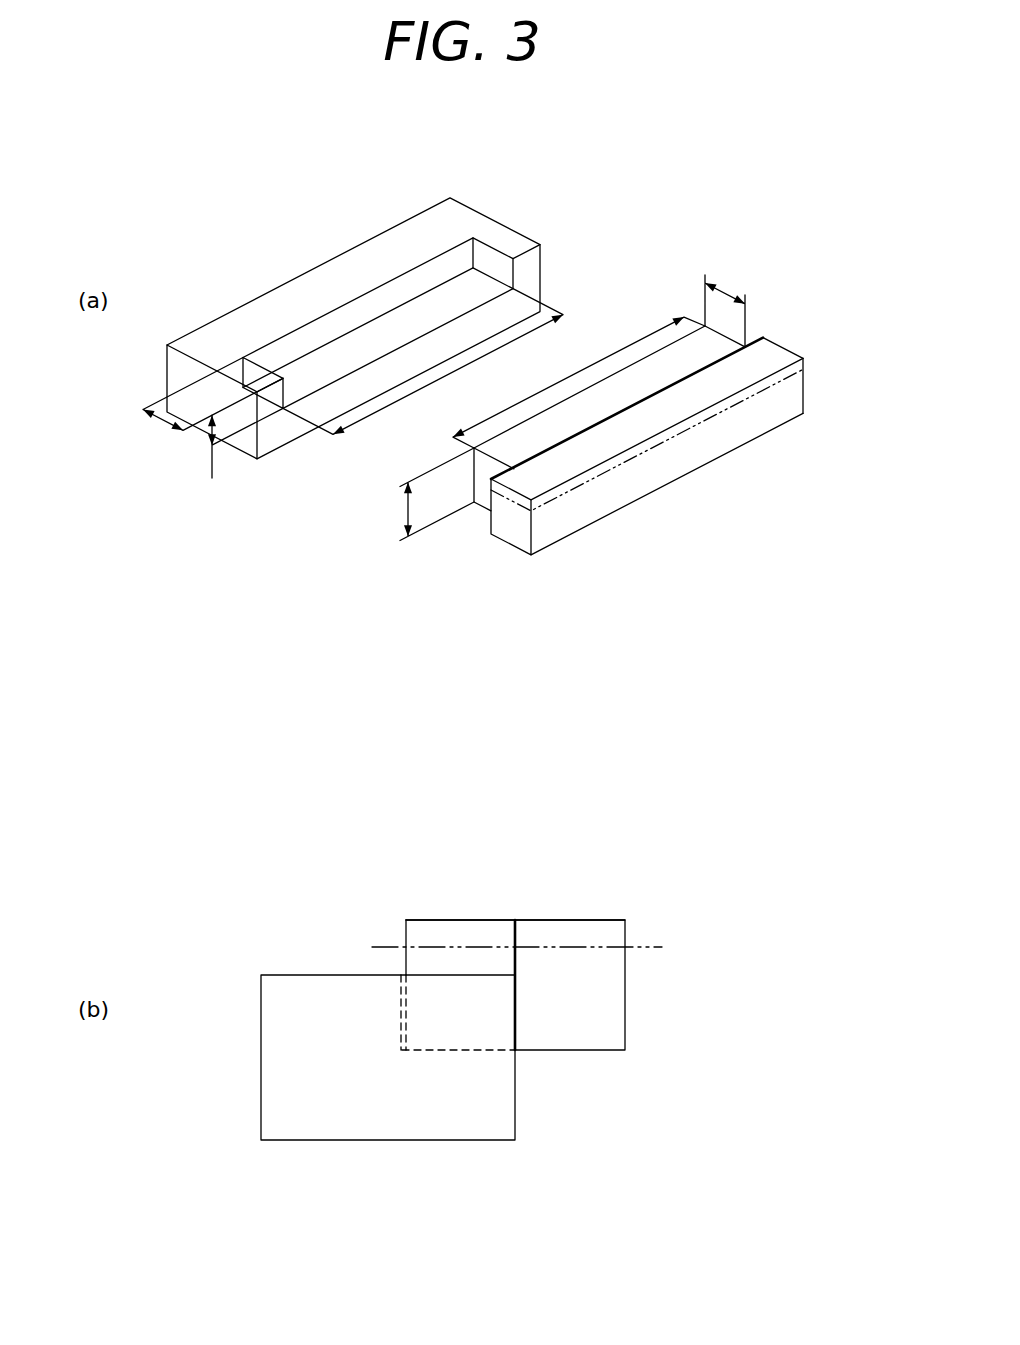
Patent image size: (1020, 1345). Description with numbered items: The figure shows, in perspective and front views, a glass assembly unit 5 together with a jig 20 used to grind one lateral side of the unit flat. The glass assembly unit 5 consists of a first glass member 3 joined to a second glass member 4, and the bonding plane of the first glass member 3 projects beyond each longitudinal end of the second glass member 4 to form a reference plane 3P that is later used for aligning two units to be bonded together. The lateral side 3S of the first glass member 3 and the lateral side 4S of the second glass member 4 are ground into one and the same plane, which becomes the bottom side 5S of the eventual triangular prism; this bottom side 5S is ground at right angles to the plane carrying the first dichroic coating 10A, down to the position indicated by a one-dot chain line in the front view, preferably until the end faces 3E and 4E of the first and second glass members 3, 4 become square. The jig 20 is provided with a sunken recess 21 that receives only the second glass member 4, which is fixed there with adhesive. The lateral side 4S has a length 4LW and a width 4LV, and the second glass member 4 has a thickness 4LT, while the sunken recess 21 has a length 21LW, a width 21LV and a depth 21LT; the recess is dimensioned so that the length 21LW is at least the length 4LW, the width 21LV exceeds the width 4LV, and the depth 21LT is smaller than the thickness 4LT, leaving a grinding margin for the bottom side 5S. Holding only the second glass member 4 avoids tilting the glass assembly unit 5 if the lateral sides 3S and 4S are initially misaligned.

The first glass member 3 is at (604, 689).
The end face of the first glass member 3E is at (517, 537).
The lateral side of the first glass member 3S is at (637, 433).
The reference plane 3P is at (479, 512).
The second glass member 4 is at (510, 626).
The end face of the second glass member 4E is at (478, 484).
The lateral side of the second glass member 4S is at (667, 358).
The glass assembly unit 5 is at (559, 689).
The bottom side 5S is at (572, 947).
The first dichroic coating 10A is at (700, 375).
The jig 20 is at (359, 661).
The sunken recess 21 is at (405, 303).
The length of the sunken recess 21LW is at (423, 362).
The width of the sunken recess 21LV is at (190, 406).
The depth of the sunken recess 21LT is at (210, 450).
The length of the second glass member 4LW is at (579, 382).
The width of the second glass member 4LV is at (735, 303).
The thickness of the second glass member 4LT is at (413, 494).